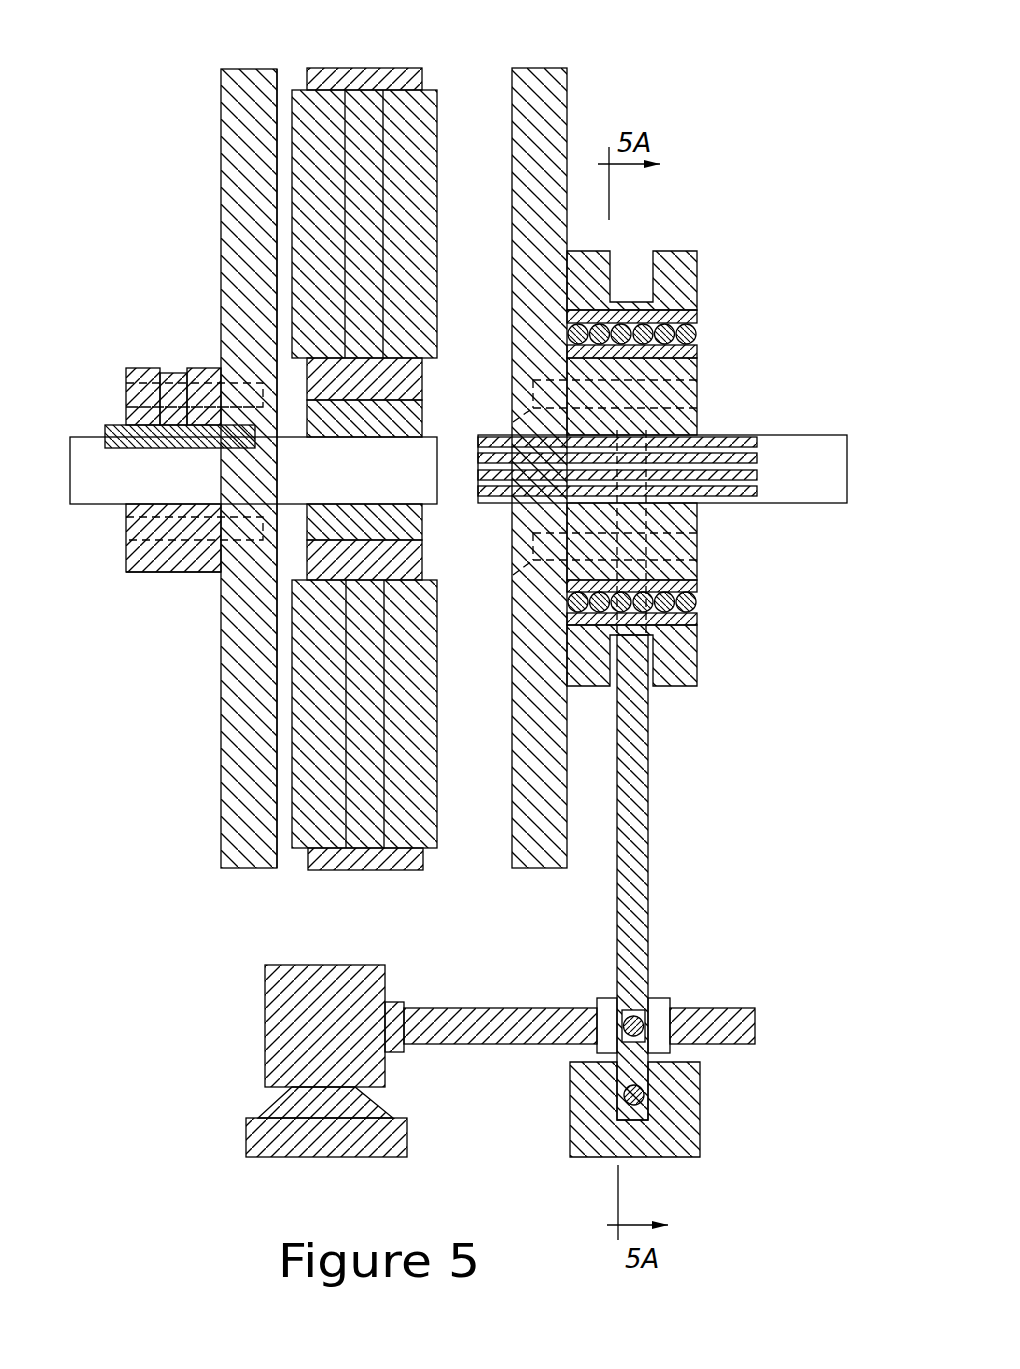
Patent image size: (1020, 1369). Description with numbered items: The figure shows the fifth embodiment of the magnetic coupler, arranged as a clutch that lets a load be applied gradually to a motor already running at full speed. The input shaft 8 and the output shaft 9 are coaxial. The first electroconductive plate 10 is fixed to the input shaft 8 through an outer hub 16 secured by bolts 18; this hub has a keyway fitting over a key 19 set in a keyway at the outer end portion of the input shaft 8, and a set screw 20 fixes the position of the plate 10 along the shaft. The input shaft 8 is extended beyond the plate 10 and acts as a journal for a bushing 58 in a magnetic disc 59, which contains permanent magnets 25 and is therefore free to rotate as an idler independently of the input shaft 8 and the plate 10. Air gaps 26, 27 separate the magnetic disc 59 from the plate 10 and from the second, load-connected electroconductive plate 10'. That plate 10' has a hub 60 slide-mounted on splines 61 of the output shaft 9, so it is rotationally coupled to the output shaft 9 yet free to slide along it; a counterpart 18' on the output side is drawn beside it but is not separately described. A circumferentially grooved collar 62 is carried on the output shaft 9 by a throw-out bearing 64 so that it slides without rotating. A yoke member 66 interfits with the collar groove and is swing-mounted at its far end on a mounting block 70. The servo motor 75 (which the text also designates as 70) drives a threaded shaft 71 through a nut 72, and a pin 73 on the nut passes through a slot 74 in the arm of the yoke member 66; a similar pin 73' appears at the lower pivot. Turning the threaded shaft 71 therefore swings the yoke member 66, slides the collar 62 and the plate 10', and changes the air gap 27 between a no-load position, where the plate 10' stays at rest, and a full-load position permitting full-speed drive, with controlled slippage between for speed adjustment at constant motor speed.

The input shaft 8 is at (70, 457).
The output shaft 9 is at (848, 455).
The electroconductive plate 10 is at (198, 461).
The electroconductive plate 10' is at (590, 461).
The outer hub 16 is at (148, 567).
The bolts 18 is at (143, 558).
The hub portion of second shaft 18' is at (653, 370).
The key 19 is at (105, 425).
The set screw 20 is at (170, 372).
The permanent magnets 25 is at (345, 157).
The air gap 26 is at (277, 677).
The air gap 27 is at (458, 783).
The bushing 58 is at (328, 537).
The magnetic disc 59 is at (385, 68).
The hub 60 is at (697, 568).
The splines 61 is at (735, 435).
The circumferentially grooved collar 62 is at (697, 251).
The throw-out bearing 64 is at (700, 595).
The yoke member 66 is at (650, 865).
The mounting block 70 is at (700, 1132).
The threaded shaft 71 is at (472, 1008).
The nut 72 is at (678, 998).
The pin 73 is at (721, 988).
The lower pin 73' is at (708, 1090).
The slot 74 is at (625, 1030).
The actuator 75 is at (265, 1020).